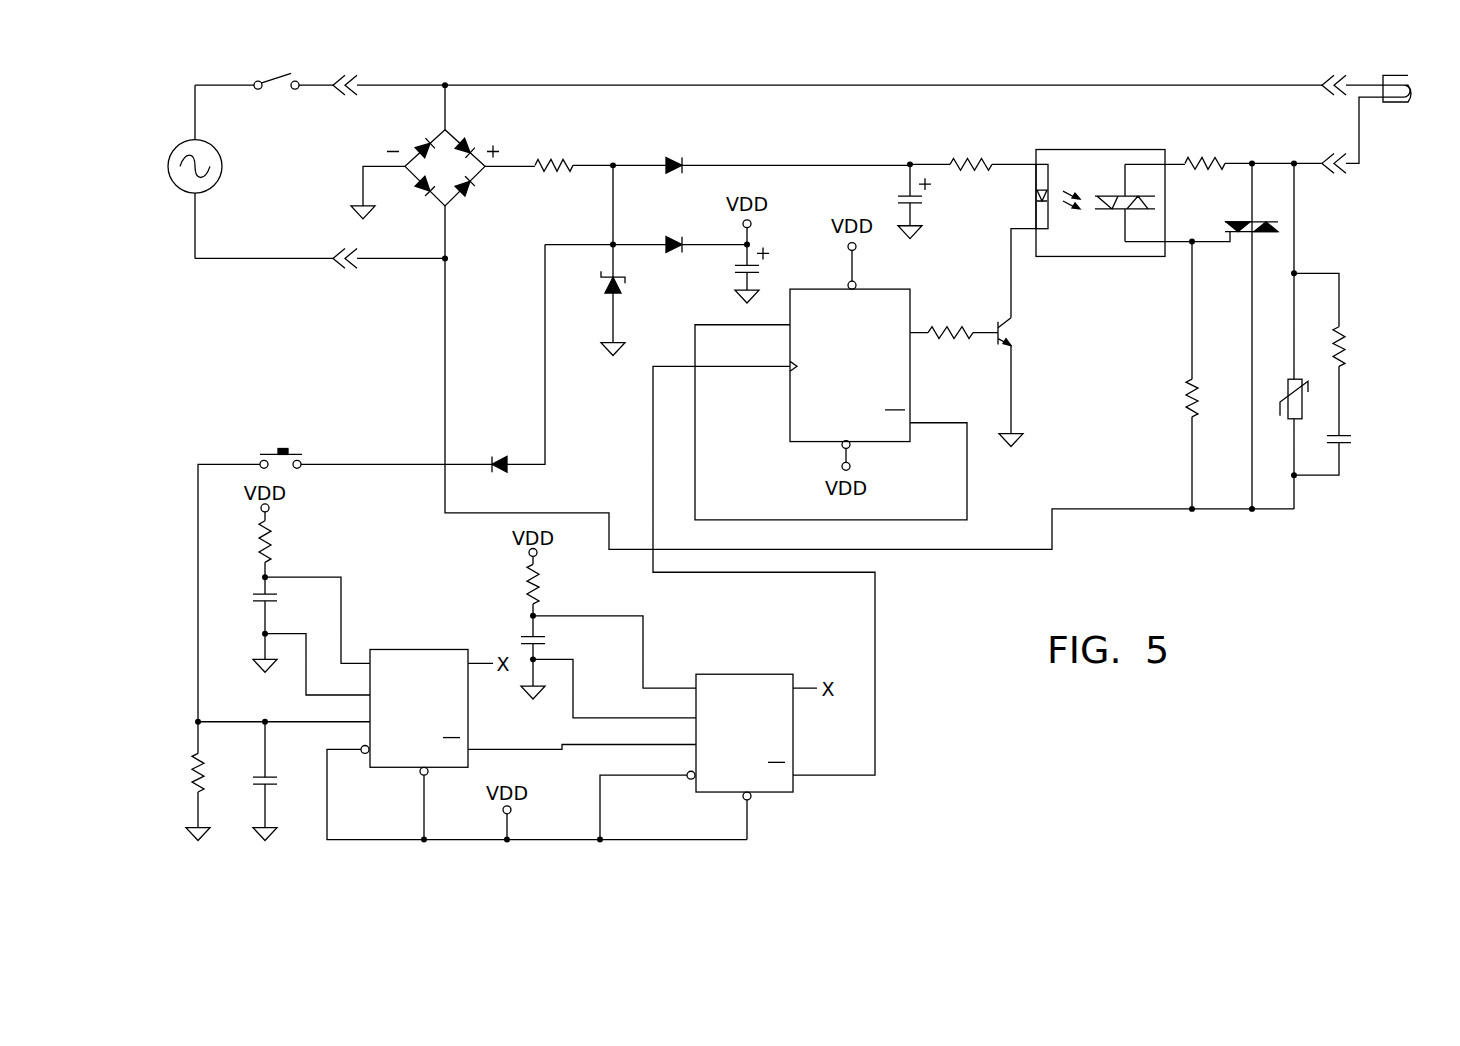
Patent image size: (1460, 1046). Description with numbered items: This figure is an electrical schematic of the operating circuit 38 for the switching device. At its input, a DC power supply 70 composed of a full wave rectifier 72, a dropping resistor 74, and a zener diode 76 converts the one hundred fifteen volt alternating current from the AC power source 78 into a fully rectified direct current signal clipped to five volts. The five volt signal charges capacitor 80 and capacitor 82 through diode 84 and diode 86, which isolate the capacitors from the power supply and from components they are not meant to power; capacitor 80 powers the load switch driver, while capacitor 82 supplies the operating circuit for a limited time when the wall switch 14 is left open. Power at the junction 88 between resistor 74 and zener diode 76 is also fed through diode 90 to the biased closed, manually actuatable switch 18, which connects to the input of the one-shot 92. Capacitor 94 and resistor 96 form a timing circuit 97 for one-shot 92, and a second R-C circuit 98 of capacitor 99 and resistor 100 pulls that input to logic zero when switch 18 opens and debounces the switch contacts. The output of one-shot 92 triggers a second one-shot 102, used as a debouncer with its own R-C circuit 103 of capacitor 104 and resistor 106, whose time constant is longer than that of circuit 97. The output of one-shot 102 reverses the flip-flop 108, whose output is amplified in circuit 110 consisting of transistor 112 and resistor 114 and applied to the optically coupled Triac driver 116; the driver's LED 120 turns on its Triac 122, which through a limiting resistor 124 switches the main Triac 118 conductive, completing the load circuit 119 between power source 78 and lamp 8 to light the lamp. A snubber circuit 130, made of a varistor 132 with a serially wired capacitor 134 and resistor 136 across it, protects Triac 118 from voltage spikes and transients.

The lamp 8 is at (1415, 100).
The wall switch 14 is at (268, 72).
The manually actuatable switch 18 is at (270, 456).
The operating circuit 38 is at (672, 70).
The DC power supply 70 is at (432, 150).
The full wave rectifier 72 is at (455, 135).
The dropping resistor 74 is at (558, 158).
The zener diode 76 is at (628, 290).
The AC power source 78 is at (217, 148).
The capacitor 80 is at (928, 203).
The capacitor 82 is at (740, 270).
The diode 84 is at (677, 152).
The diode 86 is at (672, 234).
The junction 88 is at (610, 172).
The diode 90 is at (500, 452).
The one-shot 92 is at (407, 652).
The capacitor 94 is at (250, 605).
The resistor 96 is at (272, 552).
The timing circuit 97 is at (247, 569).
The second R-C circuit 98 is at (249, 819).
The capacitor 99 is at (277, 797).
The resistor 100 is at (192, 770).
The second one-shot 102 is at (755, 678).
The R-C circuit 103 is at (535, 614).
The capacitor 104 is at (548, 644).
The resistor 106 is at (540, 600).
The flip-flop 108 is at (790, 418).
The amplifying circuit 110 is at (1060, 349).
The transistor 112 is at (1013, 328).
The resistor 114 is at (960, 328).
The driver 116 is at (1059, 181).
The Triac load switch 118 is at (1280, 226).
The load circuit 119 is at (1320, 80).
The light emitting diode 120 is at (1037, 195).
The Triac 122 is at (1112, 210).
The limiting resistor 124 is at (1212, 160).
The snubber circuit 130 is at (1361, 384).
The varistor 132 is at (1304, 412).
The capacitor 134 is at (1343, 447).
The resistor 136 is at (1343, 350).